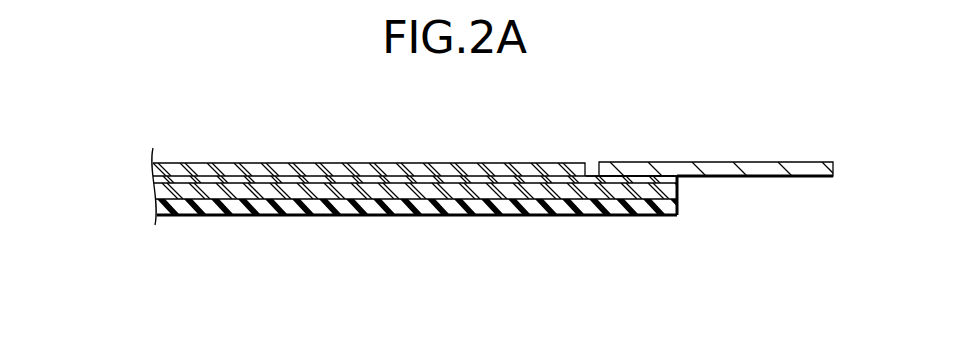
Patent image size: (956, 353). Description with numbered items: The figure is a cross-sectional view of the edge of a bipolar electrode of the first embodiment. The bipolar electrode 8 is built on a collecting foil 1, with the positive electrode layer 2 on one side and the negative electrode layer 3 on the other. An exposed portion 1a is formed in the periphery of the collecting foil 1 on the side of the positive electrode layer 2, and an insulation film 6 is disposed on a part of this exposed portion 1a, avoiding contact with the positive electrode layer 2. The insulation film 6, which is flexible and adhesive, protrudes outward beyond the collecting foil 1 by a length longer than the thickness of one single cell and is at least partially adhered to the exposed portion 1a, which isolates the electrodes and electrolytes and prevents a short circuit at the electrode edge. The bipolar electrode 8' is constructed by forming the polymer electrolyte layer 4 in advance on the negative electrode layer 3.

The bipolar electrode 8' is at (399, 173).
The bipolar electrode 8 is at (129, 186).
The positive electrode layer 2 is at (270, 163).
The negative electrode layer 3 is at (327, 187).
The polymer electrolyte layer 4 is at (223, 217).
The collecting foil 1 is at (680, 178).
The exposed portion 1a is at (585, 150).
The insulation film 6 is at (808, 162).